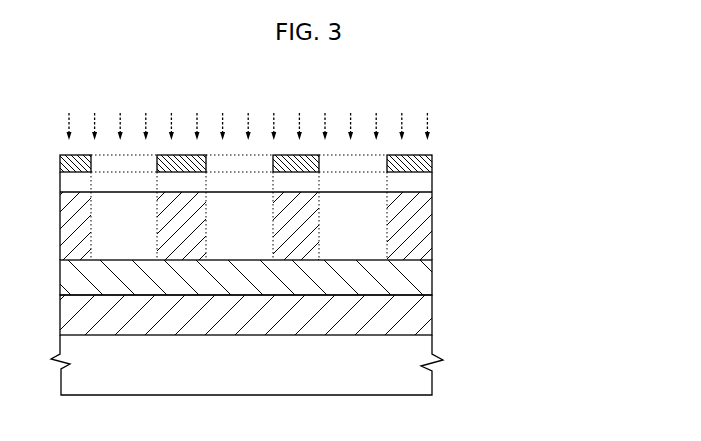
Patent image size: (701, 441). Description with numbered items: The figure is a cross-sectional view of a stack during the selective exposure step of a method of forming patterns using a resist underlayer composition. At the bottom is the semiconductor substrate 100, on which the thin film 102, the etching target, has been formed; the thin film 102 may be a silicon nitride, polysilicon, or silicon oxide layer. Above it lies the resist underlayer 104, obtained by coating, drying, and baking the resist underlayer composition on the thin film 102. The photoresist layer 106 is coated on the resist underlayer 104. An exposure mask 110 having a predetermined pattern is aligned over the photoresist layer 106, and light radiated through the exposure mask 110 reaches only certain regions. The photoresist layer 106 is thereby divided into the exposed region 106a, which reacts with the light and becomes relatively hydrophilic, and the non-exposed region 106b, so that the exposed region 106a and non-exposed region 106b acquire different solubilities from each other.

The semiconductor substrate 100 is at (432, 350).
The thin film 102 is at (432, 312).
The resist underlayer 104 is at (428, 277).
The photoresist layer 106 is at (304, 216).
The exposed region 106a is at (368, 207).
The non-exposed region 106b is at (387, 239).
The exposure mask 110 is at (432, 160).